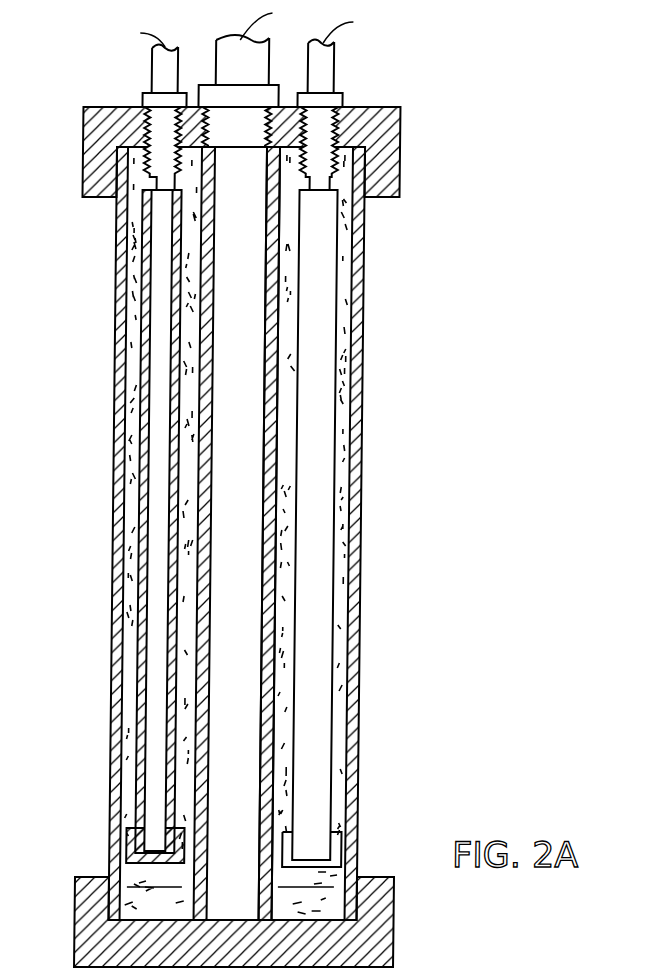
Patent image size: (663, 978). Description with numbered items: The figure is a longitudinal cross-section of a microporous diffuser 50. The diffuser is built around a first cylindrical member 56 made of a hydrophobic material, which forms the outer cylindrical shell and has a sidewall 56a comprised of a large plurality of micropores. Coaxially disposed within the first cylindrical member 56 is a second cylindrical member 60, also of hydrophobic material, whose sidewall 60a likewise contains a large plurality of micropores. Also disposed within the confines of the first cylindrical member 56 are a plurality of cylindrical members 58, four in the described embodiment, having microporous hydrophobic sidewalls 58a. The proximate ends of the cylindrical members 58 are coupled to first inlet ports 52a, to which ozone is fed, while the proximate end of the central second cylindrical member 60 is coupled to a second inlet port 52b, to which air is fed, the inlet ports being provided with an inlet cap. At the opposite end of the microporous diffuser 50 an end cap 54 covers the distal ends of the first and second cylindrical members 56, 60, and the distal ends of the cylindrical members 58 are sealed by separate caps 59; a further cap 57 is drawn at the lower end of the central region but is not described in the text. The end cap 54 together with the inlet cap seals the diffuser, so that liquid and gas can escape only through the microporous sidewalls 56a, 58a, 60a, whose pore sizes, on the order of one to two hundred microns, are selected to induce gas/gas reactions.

The microporous diffuser 50 is at (287, 485).
The first inlet ports 52a is at (141, 106).
The second inlet port 52b is at (199, 93).
The end cap 54 is at (402, 946).
The first cylindrical member 56 is at (239, 533).
The sidewall of first cylindrical member 56a is at (365, 323).
The cup 57 is at (351, 851).
The cylindrical members 58 is at (112, 521).
The sidewalls of cylindrical members 58a is at (144, 675).
The separate caps 59 is at (341, 513).
The second cylindrical member 60 is at (282, 605).
The sidewall of second cylindrical member 60a is at (276, 662).